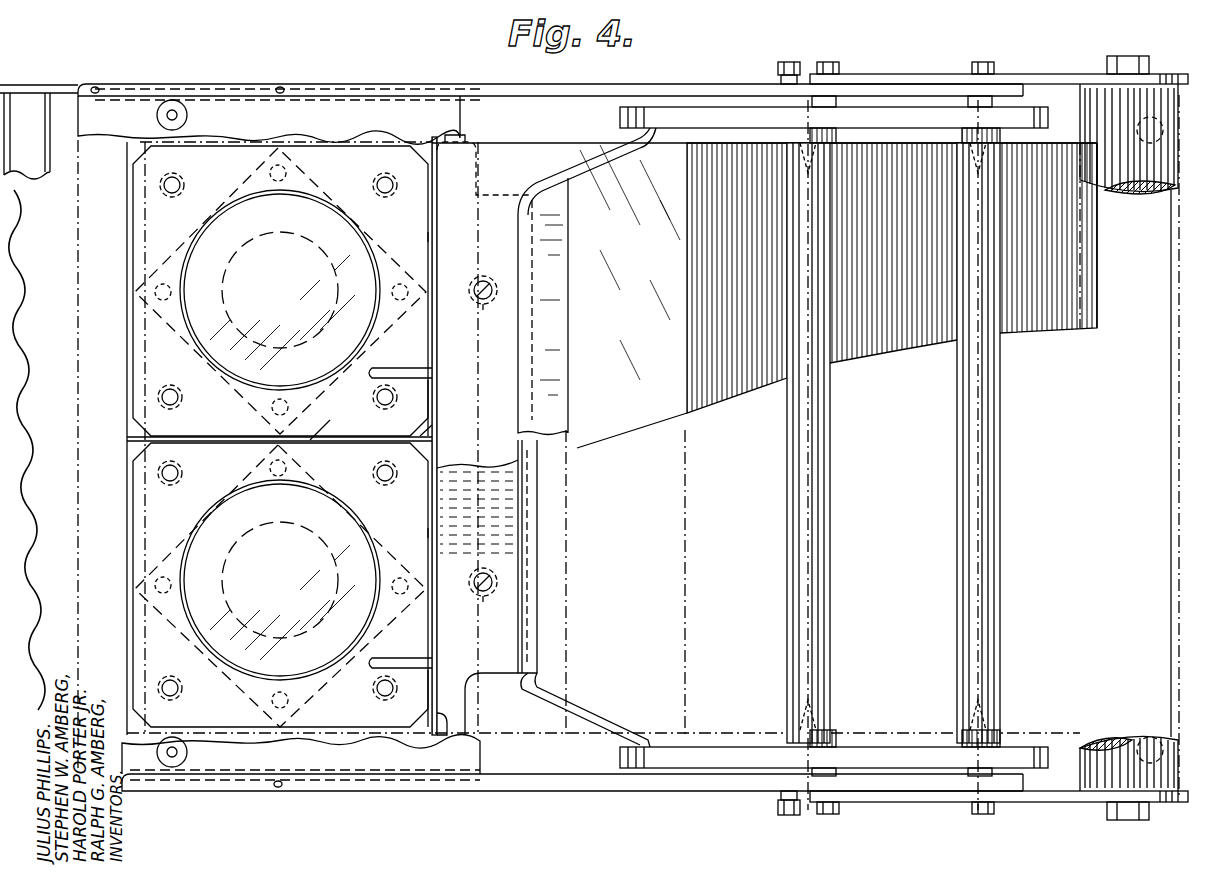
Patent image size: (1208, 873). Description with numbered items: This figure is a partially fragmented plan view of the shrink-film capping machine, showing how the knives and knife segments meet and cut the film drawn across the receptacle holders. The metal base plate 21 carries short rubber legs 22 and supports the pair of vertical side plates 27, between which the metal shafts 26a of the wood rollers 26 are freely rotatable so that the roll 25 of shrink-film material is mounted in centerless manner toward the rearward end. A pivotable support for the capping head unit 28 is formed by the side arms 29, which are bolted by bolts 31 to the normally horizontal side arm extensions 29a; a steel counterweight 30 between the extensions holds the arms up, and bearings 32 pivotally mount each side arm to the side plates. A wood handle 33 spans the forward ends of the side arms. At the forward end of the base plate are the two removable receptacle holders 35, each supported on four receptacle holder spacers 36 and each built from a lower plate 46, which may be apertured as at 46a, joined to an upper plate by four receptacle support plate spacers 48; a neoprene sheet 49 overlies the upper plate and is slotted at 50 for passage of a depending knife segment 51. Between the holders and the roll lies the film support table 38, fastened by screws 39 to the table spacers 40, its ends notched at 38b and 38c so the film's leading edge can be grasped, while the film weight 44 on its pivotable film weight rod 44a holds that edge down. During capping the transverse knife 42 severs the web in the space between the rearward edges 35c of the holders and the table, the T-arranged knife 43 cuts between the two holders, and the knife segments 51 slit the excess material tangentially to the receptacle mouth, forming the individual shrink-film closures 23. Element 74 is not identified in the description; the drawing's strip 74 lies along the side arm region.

The base plate 21 is at (1150, 441).
The rubber legs 22 is at (180, 98).
The shrink-film closures 23 is at (286, 282).
The roll of shrink-film material 25 is at (692, 331).
The wood rollers 26 is at (789, 466).
The metal shafts 26a is at (826, 118).
The vertical side plates 27 is at (669, 107).
The capping head unit 28 is at (241, 101).
The side arms 29 is at (633, 84).
The side arm extensions 29a is at (888, 60).
The counterweight 30 is at (1120, 190).
The bolts 31 is at (820, 40).
The bearings 32 is at (777, 64).
The handle 33 is at (39, 147).
The receptacle holders 35 is at (137, 258).
The rearward edges 35c is at (433, 238).
The receptacle holder spacers 36 is at (182, 700).
The film support table 38 is at (468, 484).
The forward notches 38b is at (456, 730).
The rearward notches 38c is at (488, 668).
The screws 39 is at (492, 278).
The table spacers 40 is at (480, 300).
The transverse knife 42 is at (412, 435).
The longitudinal knife 43 is at (315, 421).
The film weight 44 is at (552, 362).
The film weight rod 44a is at (582, 170).
The lower plate 46 is at (231, 390).
The aperture of lower plate 46a is at (296, 238).
The receptacle support plate spacers 48 is at (272, 702).
The neoprene sheet 49 is at (152, 222).
The slot 50 is at (408, 370).
The knife segments 51 is at (433, 370).
The strip 74 is at (138, 90).